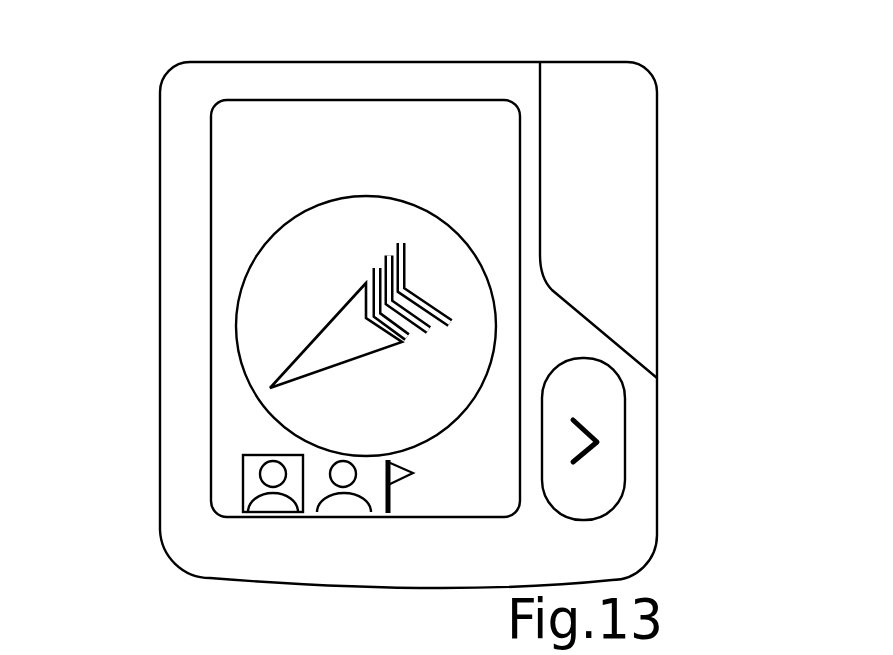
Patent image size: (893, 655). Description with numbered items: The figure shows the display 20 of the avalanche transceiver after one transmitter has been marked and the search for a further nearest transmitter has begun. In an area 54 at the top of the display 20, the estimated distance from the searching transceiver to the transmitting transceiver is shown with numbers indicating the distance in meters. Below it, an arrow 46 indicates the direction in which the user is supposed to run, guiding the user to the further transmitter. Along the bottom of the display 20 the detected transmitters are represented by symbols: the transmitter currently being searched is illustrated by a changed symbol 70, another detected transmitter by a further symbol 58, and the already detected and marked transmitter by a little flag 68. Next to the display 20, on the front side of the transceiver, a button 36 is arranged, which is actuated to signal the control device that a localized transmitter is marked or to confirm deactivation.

The display 20 is at (240, 196).
The area 54 is at (448, 142).
The arrow 46 is at (340, 328).
The changed symbol 70 is at (250, 483).
The further symbol 58 is at (342, 502).
The little flag 68 is at (393, 502).
The button 36 is at (600, 402).